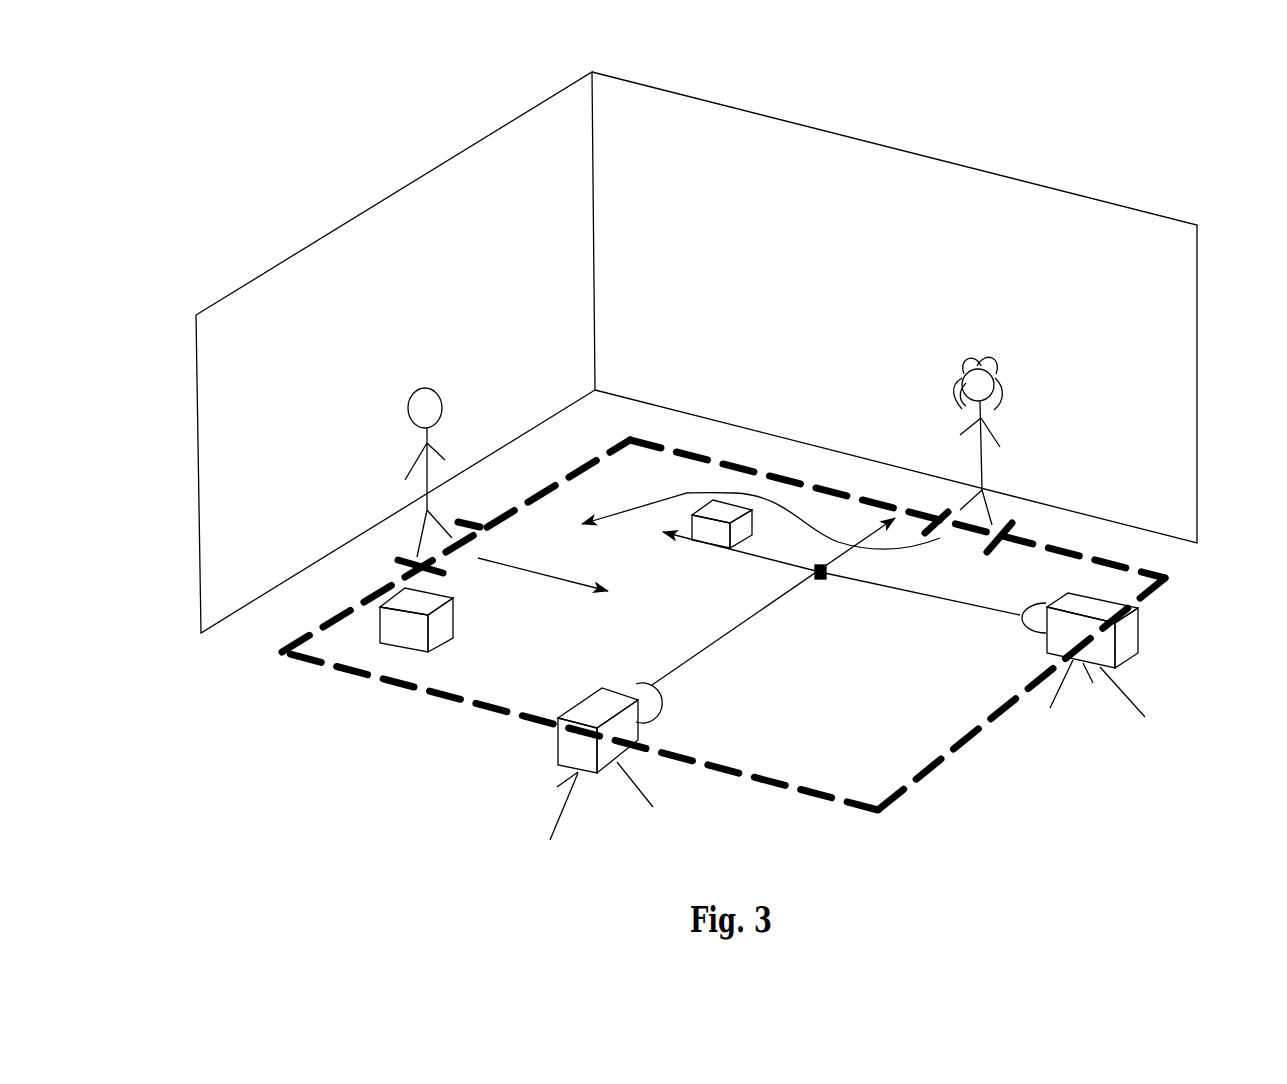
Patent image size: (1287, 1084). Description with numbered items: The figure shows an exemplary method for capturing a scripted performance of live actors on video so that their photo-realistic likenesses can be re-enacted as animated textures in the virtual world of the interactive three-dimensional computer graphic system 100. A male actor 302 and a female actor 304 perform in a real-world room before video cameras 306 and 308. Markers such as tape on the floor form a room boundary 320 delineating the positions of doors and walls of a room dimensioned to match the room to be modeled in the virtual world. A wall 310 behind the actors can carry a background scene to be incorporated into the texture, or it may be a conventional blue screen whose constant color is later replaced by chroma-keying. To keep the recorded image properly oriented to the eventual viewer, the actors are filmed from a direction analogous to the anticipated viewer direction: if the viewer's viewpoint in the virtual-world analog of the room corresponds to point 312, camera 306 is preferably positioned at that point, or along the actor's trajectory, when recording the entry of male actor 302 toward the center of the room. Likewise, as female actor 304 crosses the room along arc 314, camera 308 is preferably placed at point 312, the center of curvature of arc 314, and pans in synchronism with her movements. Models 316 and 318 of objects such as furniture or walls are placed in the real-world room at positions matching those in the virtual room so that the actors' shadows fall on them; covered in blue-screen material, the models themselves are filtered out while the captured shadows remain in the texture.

The interactive 3-D computer graphic system 100 is at (711, 854).
The male actor 302 is at (372, 490).
The female actor 304 is at (1020, 467).
The video camera 306 is at (1147, 645).
The video camera 308 is at (551, 729).
The wall 310 is at (470, 278).
The point 312 is at (818, 589).
The arc 314 is at (753, 491).
The model 316 is at (405, 650).
The model 318 is at (685, 517).
The room boundary 320 is at (968, 755).